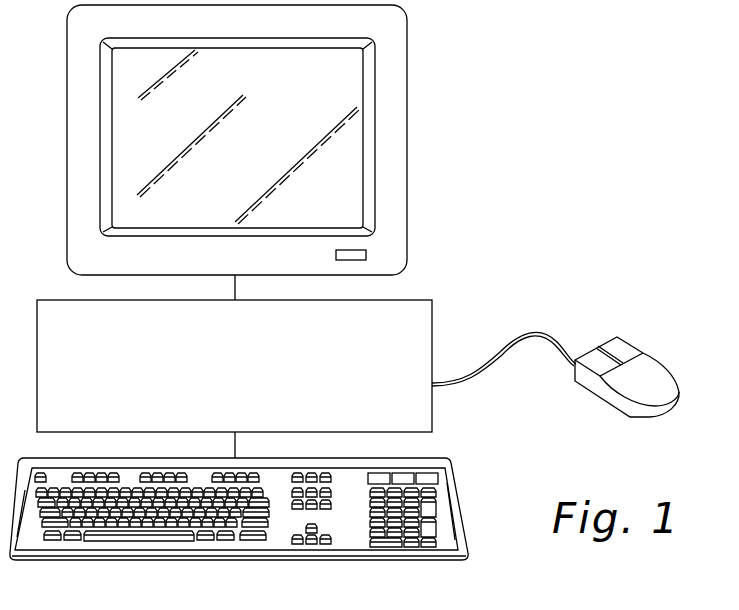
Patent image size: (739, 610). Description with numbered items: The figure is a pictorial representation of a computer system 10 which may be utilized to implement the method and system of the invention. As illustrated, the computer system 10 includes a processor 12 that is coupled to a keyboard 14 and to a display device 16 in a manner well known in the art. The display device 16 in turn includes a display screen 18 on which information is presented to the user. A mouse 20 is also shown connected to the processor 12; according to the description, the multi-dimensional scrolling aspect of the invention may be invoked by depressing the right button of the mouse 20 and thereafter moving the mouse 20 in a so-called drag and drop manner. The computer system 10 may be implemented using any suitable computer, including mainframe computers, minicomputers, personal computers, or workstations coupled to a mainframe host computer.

The computer system 10 is at (512, 252).
The processor 12 is at (432, 337).
The keyboard 14 is at (458, 497).
The display device 16 is at (407, 187).
The display screen 18 is at (358, 121).
The mouse 20 is at (625, 402).